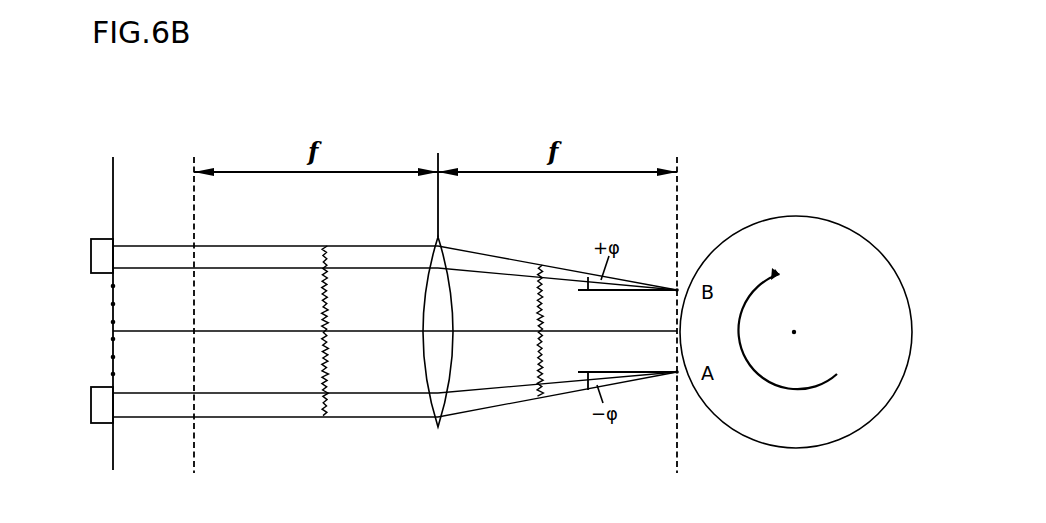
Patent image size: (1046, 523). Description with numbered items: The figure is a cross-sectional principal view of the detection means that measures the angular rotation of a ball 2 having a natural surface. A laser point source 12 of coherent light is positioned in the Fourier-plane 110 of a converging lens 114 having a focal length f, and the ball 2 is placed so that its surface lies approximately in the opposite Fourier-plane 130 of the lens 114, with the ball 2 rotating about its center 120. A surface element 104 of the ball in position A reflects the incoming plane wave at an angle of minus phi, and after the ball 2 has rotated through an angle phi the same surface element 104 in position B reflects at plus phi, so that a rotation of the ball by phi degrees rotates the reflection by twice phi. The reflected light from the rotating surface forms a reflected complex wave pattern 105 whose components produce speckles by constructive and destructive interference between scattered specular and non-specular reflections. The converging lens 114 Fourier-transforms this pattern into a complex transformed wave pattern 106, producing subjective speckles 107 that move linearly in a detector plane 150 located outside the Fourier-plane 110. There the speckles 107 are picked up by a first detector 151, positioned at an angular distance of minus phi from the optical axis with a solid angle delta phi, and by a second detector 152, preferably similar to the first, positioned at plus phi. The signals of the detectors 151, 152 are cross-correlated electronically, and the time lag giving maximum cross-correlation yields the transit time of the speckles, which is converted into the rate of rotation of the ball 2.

The ball 2 is at (787, 227).
The laser point source 12 is at (192, 332).
The surface element 104 is at (675, 275).
The reflected complex wave pattern 105 is at (531, 288).
The complex transformed wave pattern 106 is at (340, 406).
The subjective speckles 107 is at (110, 331).
The Fourier-plane 110 is at (194, 455).
The converging lens 114 is at (440, 405).
The rotation center of disk 120 is at (800, 328).
The Fourier-plane 130 is at (687, 447).
The detector plane 150 is at (112, 196).
The first detector 151 is at (91, 404).
The second detector 152 is at (91, 258).